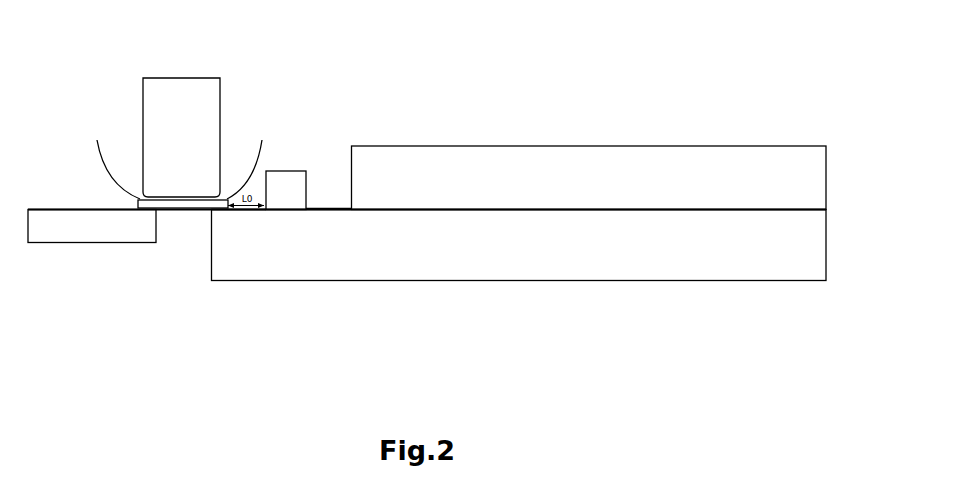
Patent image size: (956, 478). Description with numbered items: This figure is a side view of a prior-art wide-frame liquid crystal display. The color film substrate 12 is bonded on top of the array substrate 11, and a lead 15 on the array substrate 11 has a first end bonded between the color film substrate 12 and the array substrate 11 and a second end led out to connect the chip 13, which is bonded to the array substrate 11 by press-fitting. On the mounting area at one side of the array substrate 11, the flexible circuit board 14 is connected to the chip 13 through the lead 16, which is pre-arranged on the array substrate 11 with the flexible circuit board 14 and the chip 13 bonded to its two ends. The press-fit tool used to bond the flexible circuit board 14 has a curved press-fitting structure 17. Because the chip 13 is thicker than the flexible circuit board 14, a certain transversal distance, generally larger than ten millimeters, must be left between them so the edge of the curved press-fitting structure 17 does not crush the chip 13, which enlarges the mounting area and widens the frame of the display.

The array substrate 11 is at (347, 250).
The color film substrate 12 is at (508, 173).
The chip 13 is at (282, 178).
The flexible circuit board 14 is at (179, 204).
The lead 15 is at (326, 208).
The lead 16 is at (232, 211).
The curved press-fitting structure 17 is at (106, 167).